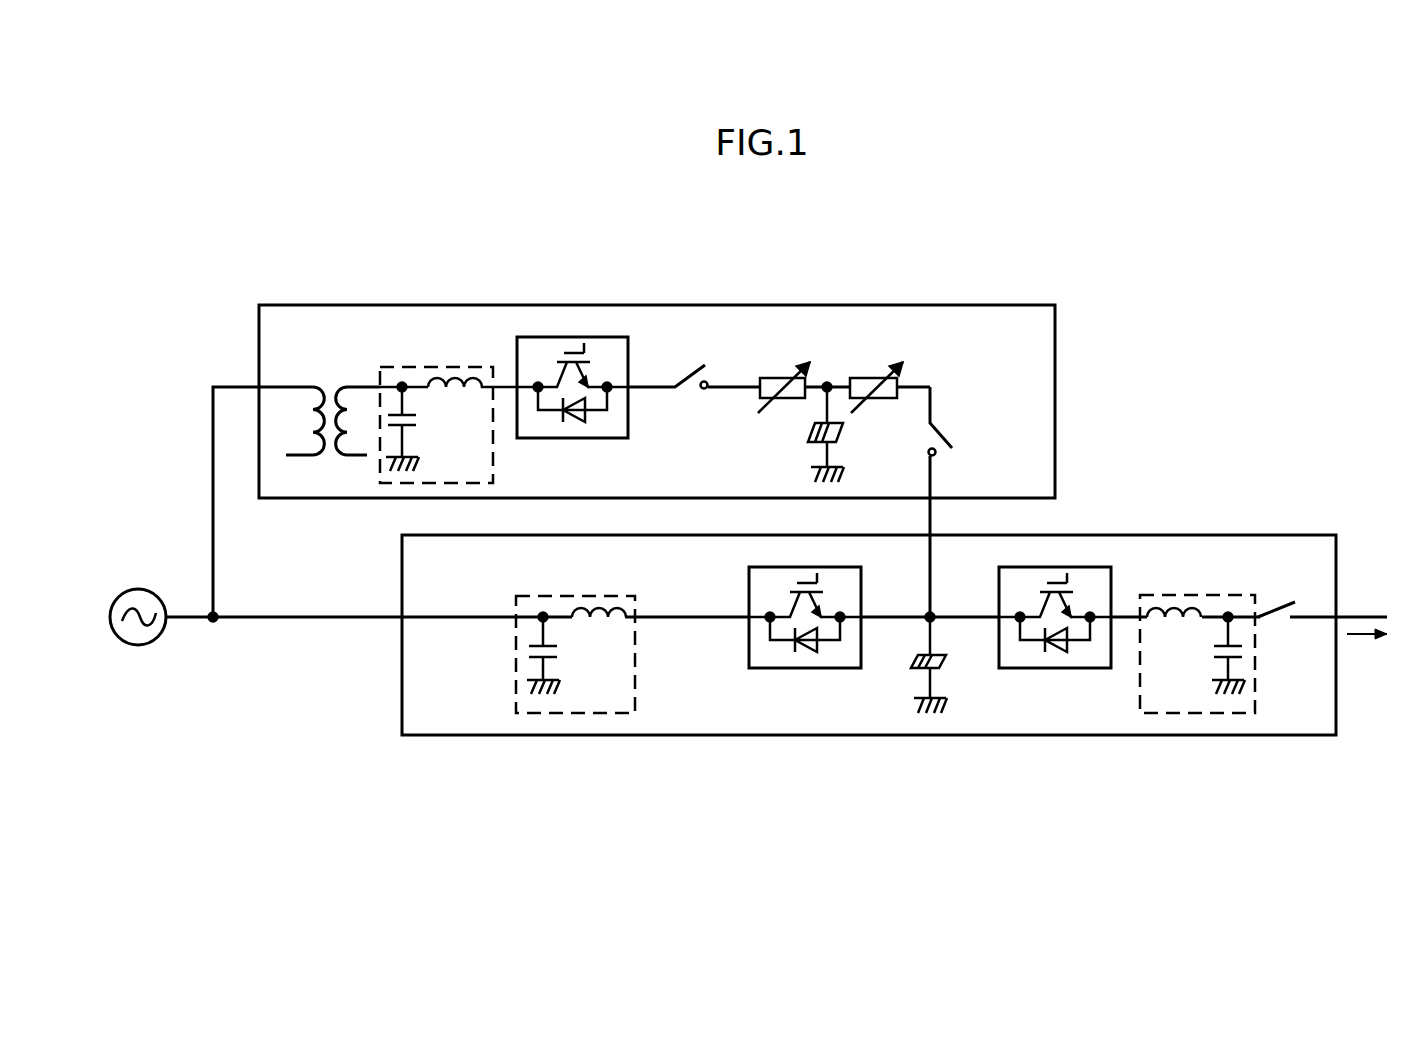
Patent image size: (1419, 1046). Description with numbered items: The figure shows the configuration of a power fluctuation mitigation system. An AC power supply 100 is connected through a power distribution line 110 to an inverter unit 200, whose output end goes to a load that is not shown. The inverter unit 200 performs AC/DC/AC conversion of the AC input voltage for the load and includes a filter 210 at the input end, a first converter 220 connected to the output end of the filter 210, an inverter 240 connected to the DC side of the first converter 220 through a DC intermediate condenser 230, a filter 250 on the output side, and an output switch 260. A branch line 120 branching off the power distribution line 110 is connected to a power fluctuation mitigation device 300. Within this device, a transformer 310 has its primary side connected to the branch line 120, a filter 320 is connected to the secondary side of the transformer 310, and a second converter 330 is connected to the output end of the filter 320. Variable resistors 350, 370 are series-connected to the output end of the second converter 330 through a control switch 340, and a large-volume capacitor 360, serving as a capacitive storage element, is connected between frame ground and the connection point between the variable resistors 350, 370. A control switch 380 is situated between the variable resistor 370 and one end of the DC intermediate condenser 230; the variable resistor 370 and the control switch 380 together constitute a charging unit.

The AC power supply 100 is at (133, 600).
The power distribution line 110 is at (286, 620).
The branch line 120 is at (208, 530).
The inverter unit 200 is at (422, 738).
The filter 210 is at (516, 683).
The first converter 220 is at (797, 669).
The DC intermediate condenser 230 is at (913, 662).
The inverter 240 is at (1057, 669).
The filter 250 is at (1140, 676).
The output switch 260 is at (1283, 618).
The power fluctuation mitigation device 300 is at (288, 307).
The transformer 310 is at (330, 383).
The filter 320 is at (420, 367).
The second converter 330 is at (572, 337).
The control switch 340 is at (690, 365).
The variable resistor 350 is at (772, 390).
The large-volume capacitor 360 is at (812, 431).
The variable resistor 370 is at (862, 390).
The control switch 380 is at (952, 432).